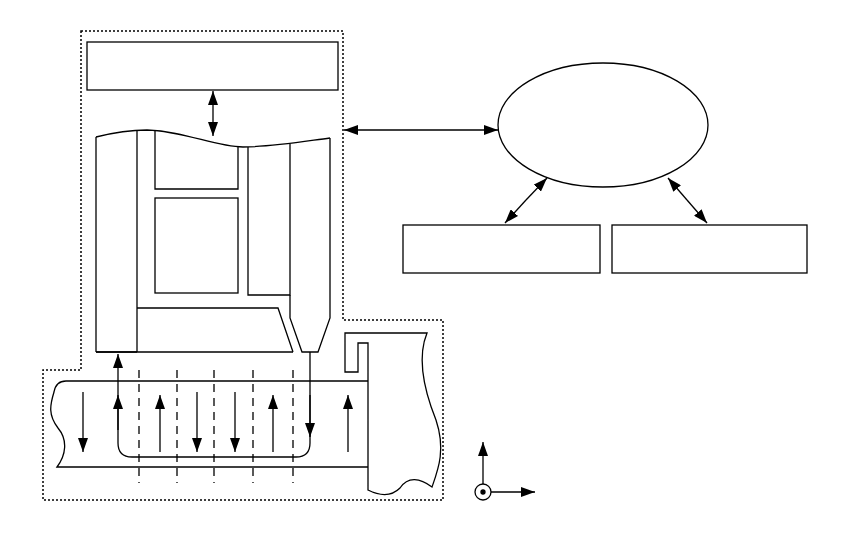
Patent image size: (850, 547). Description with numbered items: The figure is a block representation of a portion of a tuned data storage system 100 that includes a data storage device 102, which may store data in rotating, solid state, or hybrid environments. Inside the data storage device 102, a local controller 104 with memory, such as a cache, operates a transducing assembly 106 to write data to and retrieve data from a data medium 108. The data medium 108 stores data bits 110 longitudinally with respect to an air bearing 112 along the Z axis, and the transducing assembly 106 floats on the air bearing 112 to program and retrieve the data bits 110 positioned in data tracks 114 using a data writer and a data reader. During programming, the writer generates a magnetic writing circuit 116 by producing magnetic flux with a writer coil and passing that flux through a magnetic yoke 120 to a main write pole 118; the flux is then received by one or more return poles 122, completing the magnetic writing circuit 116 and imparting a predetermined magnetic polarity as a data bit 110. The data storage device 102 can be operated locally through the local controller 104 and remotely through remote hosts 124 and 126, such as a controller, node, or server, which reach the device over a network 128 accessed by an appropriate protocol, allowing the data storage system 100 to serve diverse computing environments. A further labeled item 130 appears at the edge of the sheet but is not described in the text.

The data storage system 100 is at (714, 62).
The data storage device 102 is at (80, 148).
The local controller 104 is at (126, 75).
The transducing assembly 106 is at (180, 241).
The data medium 108 is at (50, 404).
The data bits 110 is at (84, 456).
The air bearing 112 is at (79, 358).
The data tracks 114 is at (196, 481).
The magnetic writing circuit 116 is at (302, 457).
The main write pole 118 is at (326, 311).
The magnetic yoke 120 is at (286, 265).
The return pole 122 is at (133, 311).
The remote host 124 is at (441, 259).
The remote host 126 is at (803, 259).
The network 128 is at (588, 88).
The slider 130 is at (748, 546).